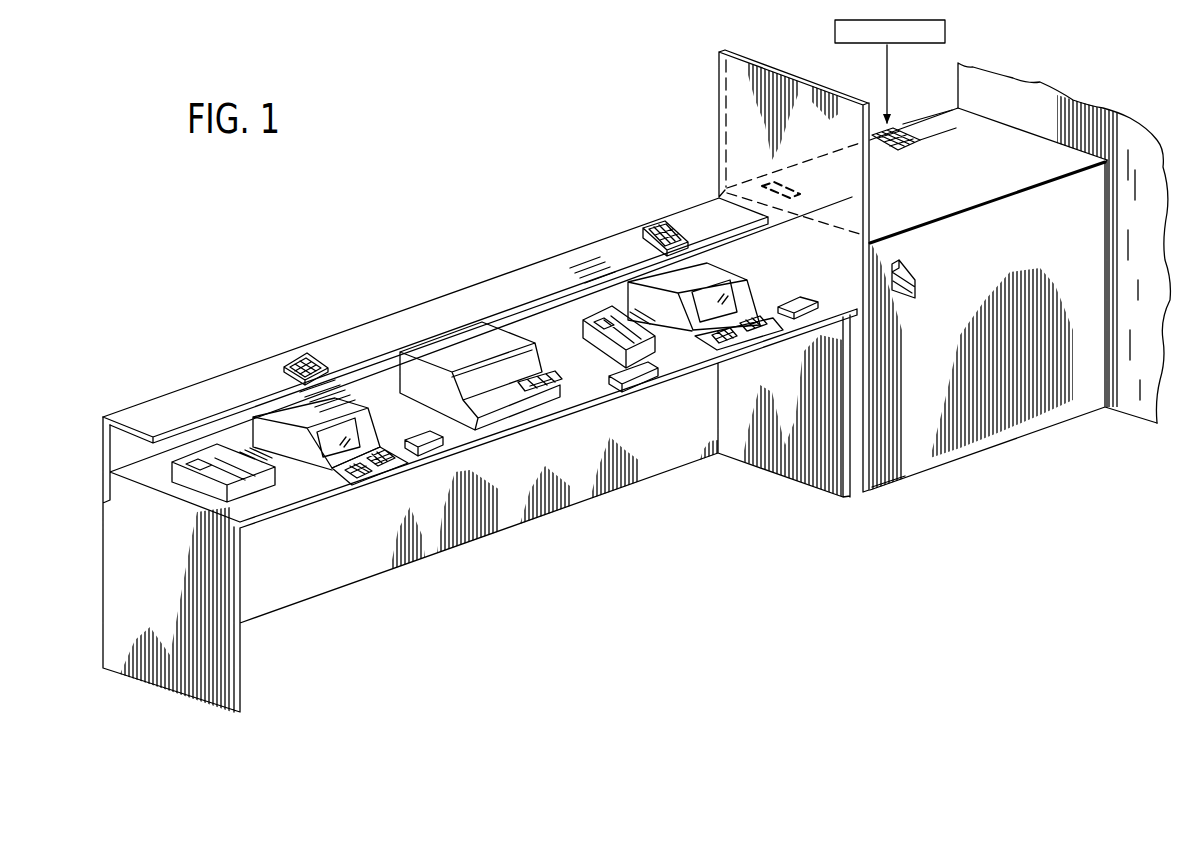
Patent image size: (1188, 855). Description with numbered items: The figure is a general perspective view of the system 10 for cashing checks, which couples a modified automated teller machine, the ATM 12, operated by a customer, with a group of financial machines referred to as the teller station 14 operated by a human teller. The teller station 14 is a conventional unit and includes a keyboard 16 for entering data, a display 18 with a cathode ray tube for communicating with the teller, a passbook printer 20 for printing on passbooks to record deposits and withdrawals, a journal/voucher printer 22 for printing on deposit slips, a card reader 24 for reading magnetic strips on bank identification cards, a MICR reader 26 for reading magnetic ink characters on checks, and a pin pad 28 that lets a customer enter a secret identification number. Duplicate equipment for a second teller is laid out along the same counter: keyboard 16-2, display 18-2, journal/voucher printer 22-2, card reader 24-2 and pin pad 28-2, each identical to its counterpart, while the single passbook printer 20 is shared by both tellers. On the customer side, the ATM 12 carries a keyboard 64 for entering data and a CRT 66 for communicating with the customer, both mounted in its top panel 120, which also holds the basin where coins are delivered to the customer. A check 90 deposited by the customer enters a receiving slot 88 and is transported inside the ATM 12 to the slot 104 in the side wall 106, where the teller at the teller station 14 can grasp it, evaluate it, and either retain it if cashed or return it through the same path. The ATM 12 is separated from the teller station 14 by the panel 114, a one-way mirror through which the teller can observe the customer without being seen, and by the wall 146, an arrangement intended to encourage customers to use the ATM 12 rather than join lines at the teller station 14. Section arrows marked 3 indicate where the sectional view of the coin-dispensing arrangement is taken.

The system 10 is at (431, 211).
The automated teller machine 12 is at (1024, 451).
The teller station 14 is at (453, 281).
The keyboard 16 is at (735, 333).
The keyboard 16-2 is at (365, 469).
The display 18 is at (722, 298).
The display 18-2 is at (332, 440).
The passbook printer 20 is at (517, 403).
The journal/voucher printer 22 is at (590, 355).
The journal/voucher printer 22-2 is at (252, 492).
The card reader 24 is at (802, 297).
The card reader 24-2 is at (433, 443).
The MICR reader 26 is at (642, 377).
The pin pad 28 is at (643, 229).
The pin pad 28-2 is at (282, 360).
The keyboard 64 is at (913, 145).
The CRT 66 is at (940, 128).
The receiving slot 88 is at (801, 195).
The check 90 is at (912, 298).
The slot 104 is at (903, 267).
The side wall 106 is at (920, 455).
The panel 114 is at (718, 68).
The top panel 120 is at (1053, 158).
The wall 146 is at (1037, 103).
The section line 3- 3 is at (632, 155).